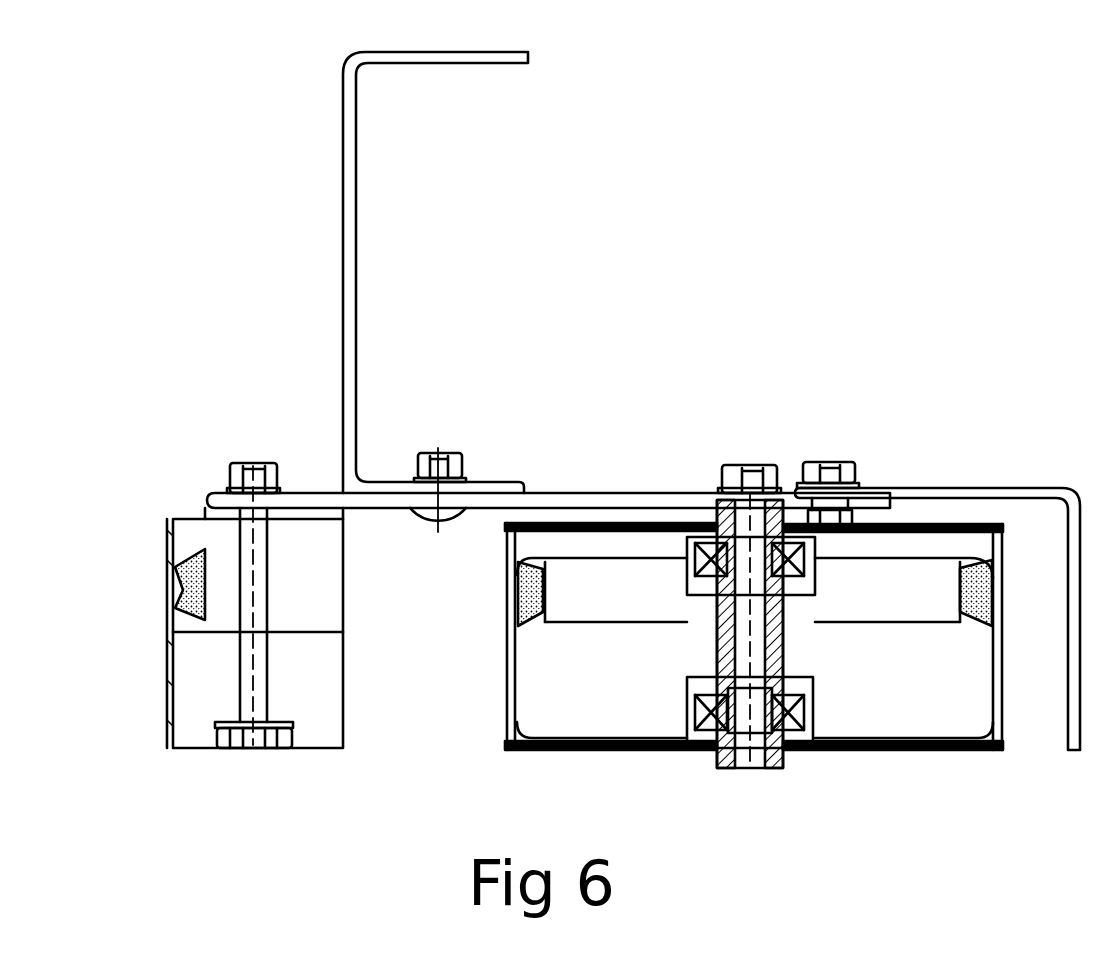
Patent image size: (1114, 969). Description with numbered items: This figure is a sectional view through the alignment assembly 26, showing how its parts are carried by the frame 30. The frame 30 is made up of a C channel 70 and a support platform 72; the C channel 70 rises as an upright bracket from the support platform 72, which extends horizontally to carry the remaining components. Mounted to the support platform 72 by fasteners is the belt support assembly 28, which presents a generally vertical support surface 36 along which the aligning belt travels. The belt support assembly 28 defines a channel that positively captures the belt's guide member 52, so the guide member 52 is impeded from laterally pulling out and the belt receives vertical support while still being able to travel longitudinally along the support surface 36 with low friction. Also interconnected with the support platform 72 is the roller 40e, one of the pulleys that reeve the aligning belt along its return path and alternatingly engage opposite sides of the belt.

The alignment assembly 26 is at (759, 534).
The belt support assembly 28 is at (239, 567).
The frame 30 is at (383, 272).
The support surface 36 is at (178, 652).
The pulley 40e is at (890, 750).
The guide member 52 is at (528, 621).
The C channel 70 is at (345, 241).
The support platform 72 is at (555, 493).